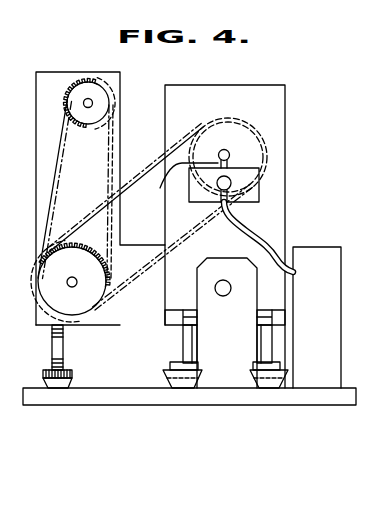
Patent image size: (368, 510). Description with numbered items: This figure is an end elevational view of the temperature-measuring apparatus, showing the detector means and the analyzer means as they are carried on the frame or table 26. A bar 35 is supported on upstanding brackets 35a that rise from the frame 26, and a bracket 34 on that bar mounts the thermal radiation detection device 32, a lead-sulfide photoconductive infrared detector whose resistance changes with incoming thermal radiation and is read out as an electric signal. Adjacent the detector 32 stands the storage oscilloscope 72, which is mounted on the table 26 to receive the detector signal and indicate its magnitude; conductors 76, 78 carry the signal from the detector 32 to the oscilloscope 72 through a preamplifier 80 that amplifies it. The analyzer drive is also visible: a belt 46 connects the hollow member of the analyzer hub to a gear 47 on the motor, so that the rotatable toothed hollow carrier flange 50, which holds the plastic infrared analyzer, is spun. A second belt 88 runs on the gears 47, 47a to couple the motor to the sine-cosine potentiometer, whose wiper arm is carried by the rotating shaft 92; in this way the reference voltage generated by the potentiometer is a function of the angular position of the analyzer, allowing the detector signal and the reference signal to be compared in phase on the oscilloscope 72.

The frame or table 26 is at (116, 388).
The thermal radiation detection device 32 is at (230, 153).
The bracket 34 is at (286, 104).
The bar 35 is at (229, 294).
The brackets 35a is at (218, 258).
The belt 46 is at (156, 166).
The gear 47 is at (70, 277).
The gear 47a is at (76, 124).
The rotatable toothed hollow carrier flange 50 is at (215, 118).
The oscilloscope 72 is at (331, 300).
The conductor 76 is at (292, 231).
The conductor 78 is at (228, 165).
The preamplifier 80 is at (259, 193).
The belt 88 is at (53, 209).
The rotating shaft 92 is at (96, 98).